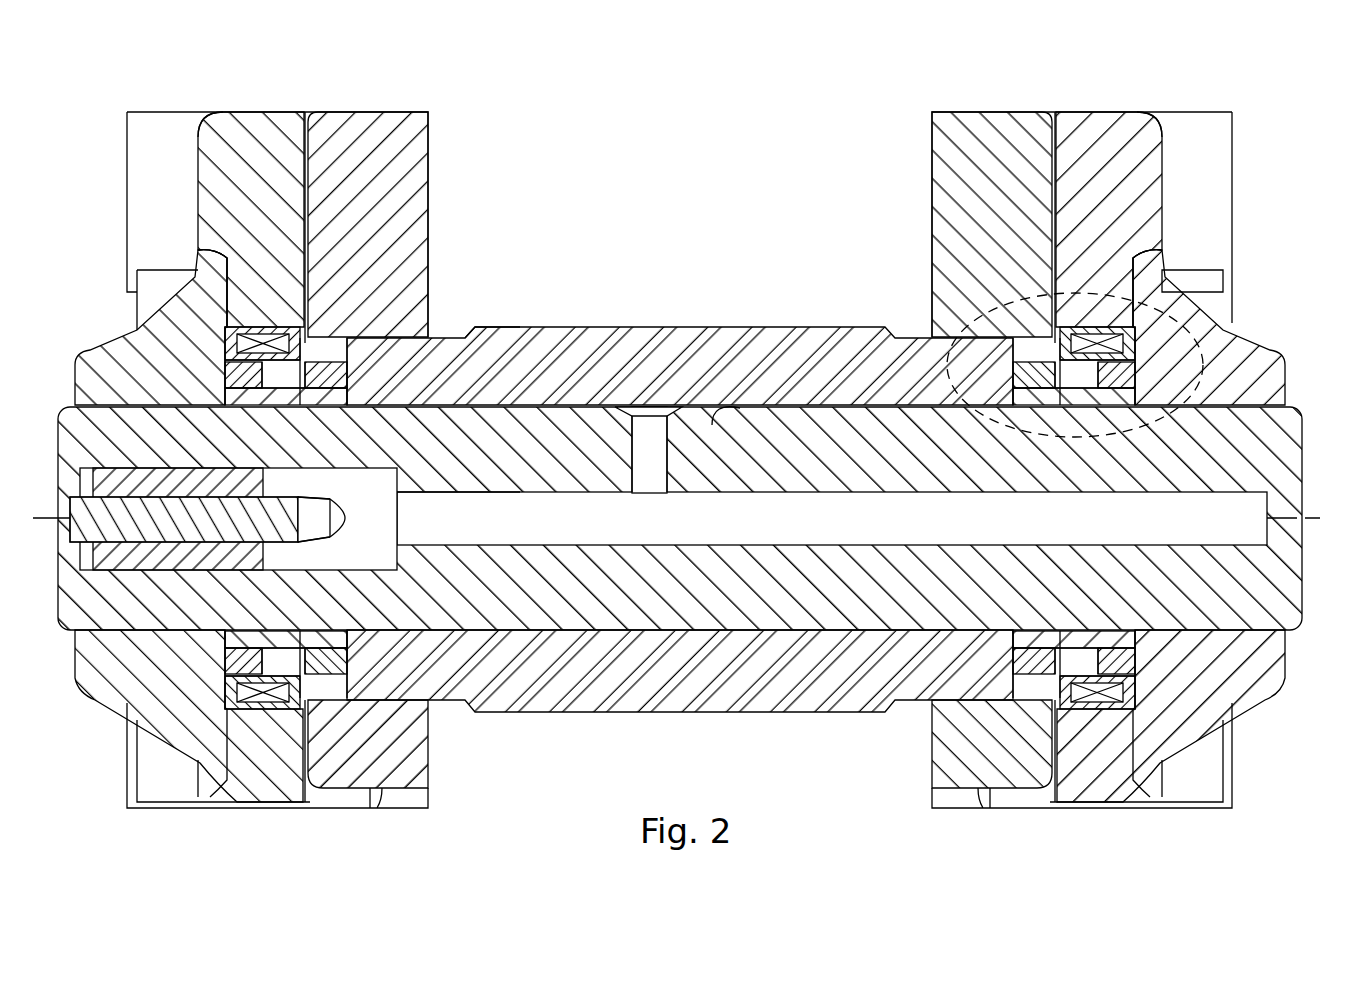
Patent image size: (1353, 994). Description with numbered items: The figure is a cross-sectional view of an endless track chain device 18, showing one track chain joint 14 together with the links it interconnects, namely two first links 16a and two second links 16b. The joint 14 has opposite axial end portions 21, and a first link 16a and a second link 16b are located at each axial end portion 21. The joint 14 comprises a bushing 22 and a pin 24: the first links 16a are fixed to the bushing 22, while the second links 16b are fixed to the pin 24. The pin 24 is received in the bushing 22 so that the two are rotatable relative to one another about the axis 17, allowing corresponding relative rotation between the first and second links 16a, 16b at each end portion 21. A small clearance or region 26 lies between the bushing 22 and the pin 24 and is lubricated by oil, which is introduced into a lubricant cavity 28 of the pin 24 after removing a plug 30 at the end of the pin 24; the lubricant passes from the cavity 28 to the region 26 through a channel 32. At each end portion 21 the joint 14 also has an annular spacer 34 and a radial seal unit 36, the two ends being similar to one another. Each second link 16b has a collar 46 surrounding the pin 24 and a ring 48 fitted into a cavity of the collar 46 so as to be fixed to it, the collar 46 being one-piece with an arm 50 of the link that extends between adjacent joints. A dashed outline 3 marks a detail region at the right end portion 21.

The detail region 3 is at (1248, 318).
The track chain joint 14 is at (495, 308).
The first link 16a is at (420, 140).
The second link 16b is at (258, 122).
The axis 17 is at (1108, 521).
The endless track chain device 18 is at (1302, 138).
The axial end portion 21 is at (103, 310).
The bushing 22 is at (600, 330).
The pin 24 is at (563, 455).
The region 26 is at (740, 408).
The lubricant cavity 28 is at (445, 494).
The plug 30 is at (318, 528).
The channel 32 is at (655, 455).
The annular spacer 34 is at (308, 392).
The radial seal unit 36 is at (281, 385).
The collar 46 is at (92, 347).
The ring 48 is at (226, 243).
The arm 50 is at (212, 168).